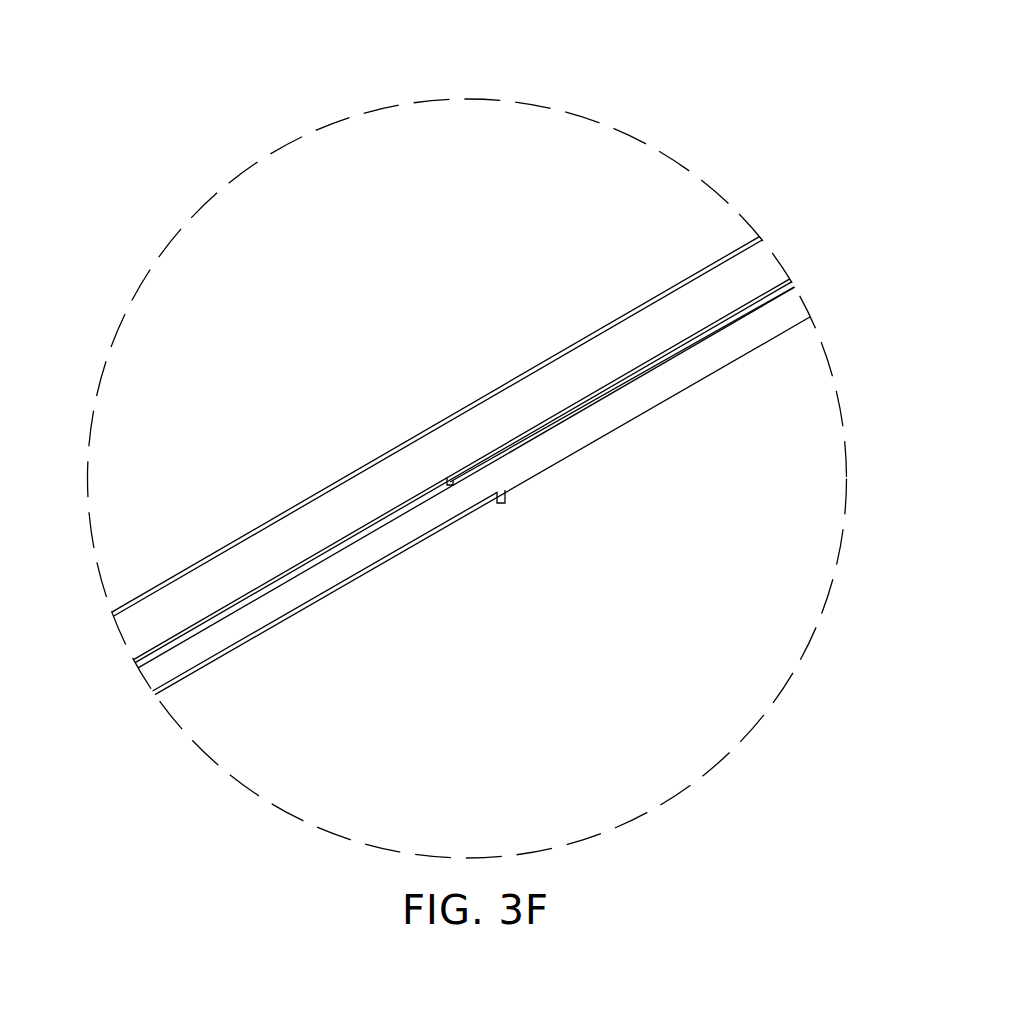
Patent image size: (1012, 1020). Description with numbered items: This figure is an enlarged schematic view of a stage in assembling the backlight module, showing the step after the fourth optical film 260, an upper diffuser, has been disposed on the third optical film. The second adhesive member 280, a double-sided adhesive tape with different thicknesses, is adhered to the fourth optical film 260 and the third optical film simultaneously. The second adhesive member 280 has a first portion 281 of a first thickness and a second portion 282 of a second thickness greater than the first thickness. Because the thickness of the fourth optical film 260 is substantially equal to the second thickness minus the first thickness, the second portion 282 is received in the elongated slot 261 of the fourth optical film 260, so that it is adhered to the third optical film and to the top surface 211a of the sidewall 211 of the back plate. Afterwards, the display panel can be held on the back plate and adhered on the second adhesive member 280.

The sidewall 211 is at (754, 275).
The top surface 211a is at (181, 635).
The fourth optical film 260 is at (806, 447).
The elongated slot 261 is at (327, 603).
The second adhesive member 280 is at (478, 53).
The first portion 281 is at (528, 462).
The second portion 282 is at (397, 542).